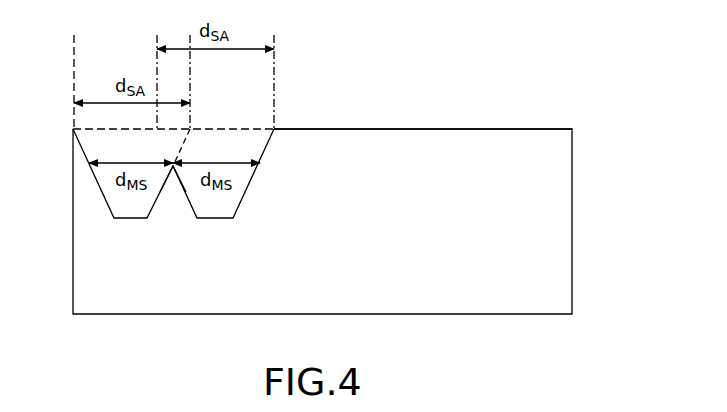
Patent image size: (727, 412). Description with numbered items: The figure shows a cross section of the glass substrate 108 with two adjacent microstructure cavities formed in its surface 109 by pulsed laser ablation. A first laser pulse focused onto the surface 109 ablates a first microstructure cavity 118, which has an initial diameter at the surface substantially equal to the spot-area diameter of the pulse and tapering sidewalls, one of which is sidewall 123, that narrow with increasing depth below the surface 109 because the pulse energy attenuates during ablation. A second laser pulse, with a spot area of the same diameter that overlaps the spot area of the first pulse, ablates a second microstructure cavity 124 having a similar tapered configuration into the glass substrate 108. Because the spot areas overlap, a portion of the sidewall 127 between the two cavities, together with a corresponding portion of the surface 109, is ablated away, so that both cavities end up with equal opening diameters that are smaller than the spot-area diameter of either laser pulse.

The glass substrate 108 is at (572, 153).
The surface 109 is at (397, 129).
The first microstructure cavity 118 is at (100, 193).
The second microstructure cavity 124 is at (243, 195).
The sidewall 123 is at (185, 143).
The sidewall 127 is at (172, 190).